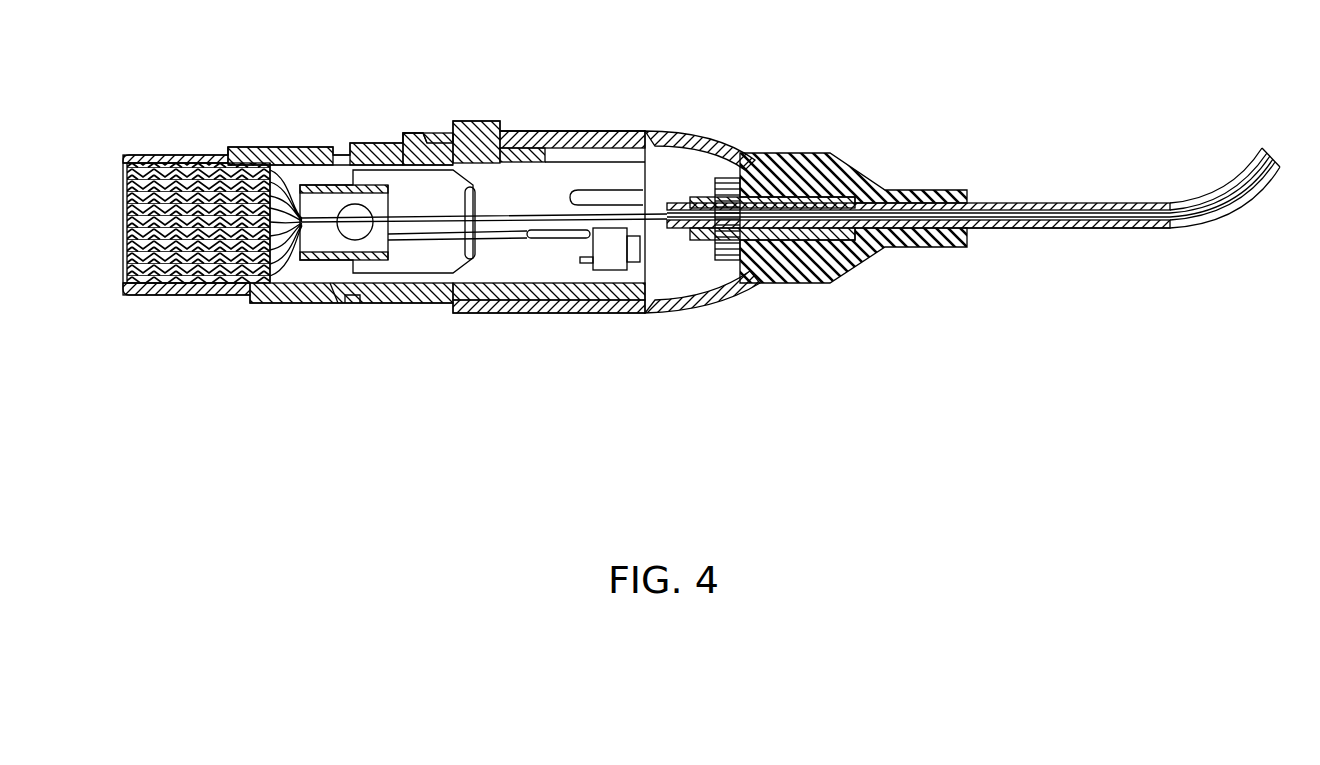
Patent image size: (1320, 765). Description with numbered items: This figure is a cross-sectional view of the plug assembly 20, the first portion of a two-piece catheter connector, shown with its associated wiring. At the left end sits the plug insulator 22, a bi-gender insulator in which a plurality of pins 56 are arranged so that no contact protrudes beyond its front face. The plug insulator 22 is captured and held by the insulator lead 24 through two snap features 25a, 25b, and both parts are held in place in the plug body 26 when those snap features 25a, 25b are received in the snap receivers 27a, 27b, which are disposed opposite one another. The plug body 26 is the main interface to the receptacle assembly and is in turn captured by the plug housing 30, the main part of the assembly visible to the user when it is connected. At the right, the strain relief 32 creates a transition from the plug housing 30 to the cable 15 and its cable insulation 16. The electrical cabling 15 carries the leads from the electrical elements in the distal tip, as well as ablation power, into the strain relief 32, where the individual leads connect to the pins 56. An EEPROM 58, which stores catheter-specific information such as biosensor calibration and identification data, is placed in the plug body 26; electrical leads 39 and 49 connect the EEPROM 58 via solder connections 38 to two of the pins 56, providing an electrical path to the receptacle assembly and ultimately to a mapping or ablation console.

The cable 15 is at (1132, 203).
The cable insulation 16 is at (1031, 248).
The plug assembly 20 is at (718, 72).
The plug insulator 22 is at (175, 287).
The insulator lead 24 is at (300, 276).
The snap feature 25a is at (338, 155).
The snap feature 25b is at (352, 303).
The plug body 26 is at (207, 152).
The snap receiver 27a is at (342, 160).
The snap receiver 27b is at (345, 290).
The plug housing 30 is at (570, 132).
The strain relief 32 is at (850, 165).
The solder connections 38 is at (530, 270).
The electrical lead 39 is at (510, 222).
The electrical lead 49 is at (495, 257).
The pins 56 is at (222, 153).
The EEPROM 58 is at (633, 280).